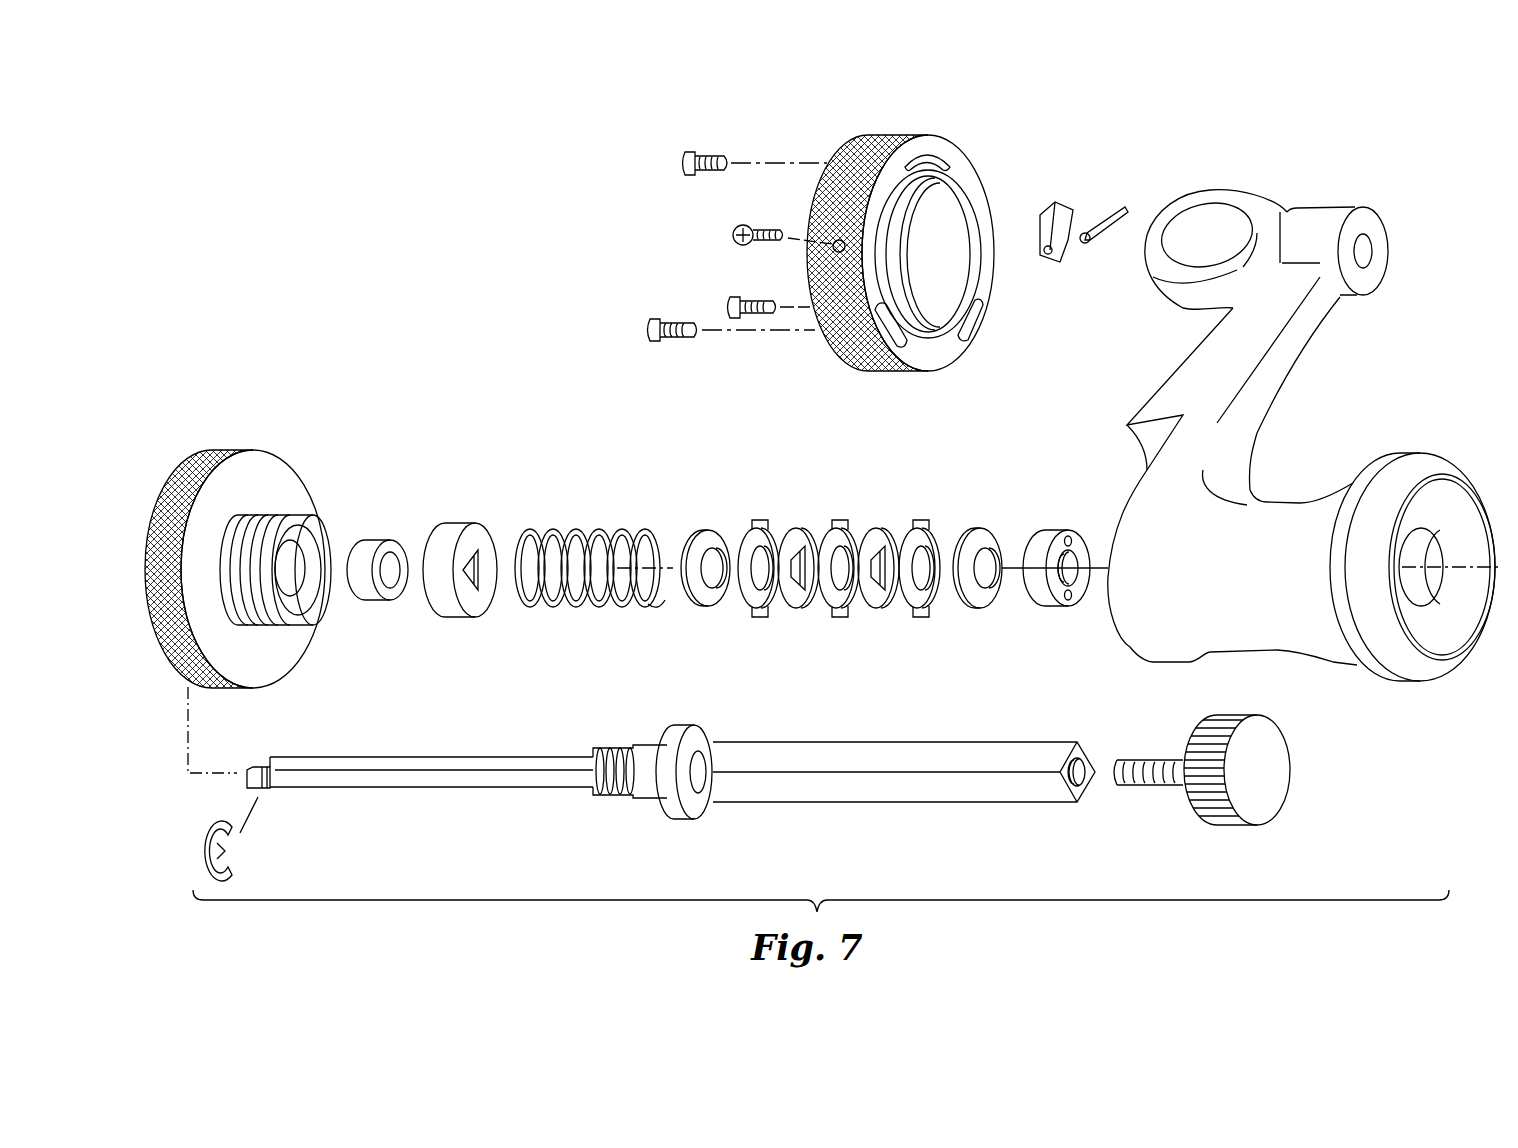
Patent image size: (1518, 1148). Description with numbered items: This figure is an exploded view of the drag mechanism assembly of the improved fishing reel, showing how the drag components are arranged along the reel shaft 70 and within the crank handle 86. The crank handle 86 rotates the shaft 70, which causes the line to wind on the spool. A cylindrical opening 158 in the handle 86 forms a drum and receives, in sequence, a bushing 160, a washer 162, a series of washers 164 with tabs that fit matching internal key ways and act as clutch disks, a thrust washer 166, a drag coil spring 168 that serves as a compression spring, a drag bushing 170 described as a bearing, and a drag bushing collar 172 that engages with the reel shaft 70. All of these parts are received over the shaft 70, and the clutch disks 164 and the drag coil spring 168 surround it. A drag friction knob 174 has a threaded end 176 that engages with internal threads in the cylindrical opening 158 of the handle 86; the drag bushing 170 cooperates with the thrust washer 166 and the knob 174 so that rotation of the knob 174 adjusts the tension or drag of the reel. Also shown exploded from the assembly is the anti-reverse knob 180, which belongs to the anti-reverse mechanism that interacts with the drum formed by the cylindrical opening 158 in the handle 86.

The reel shaft 70 is at (480, 760).
The crank handle 86 is at (1282, 372).
The cylindrical opening 158 is at (1425, 545).
The bushing 160 is at (1042, 537).
The washer 162 is at (977, 537).
The clutch disks 164 is at (738, 508).
The thrust washer 166 is at (713, 540).
The drag coil spring 168 is at (575, 530).
The drag bushing 170 is at (467, 527).
The drag bushing collar 172 is at (387, 540).
The drag friction knob 174 is at (253, 475).
The threaded end 176 is at (312, 517).
The anti-reverse knob 180 is at (912, 137).